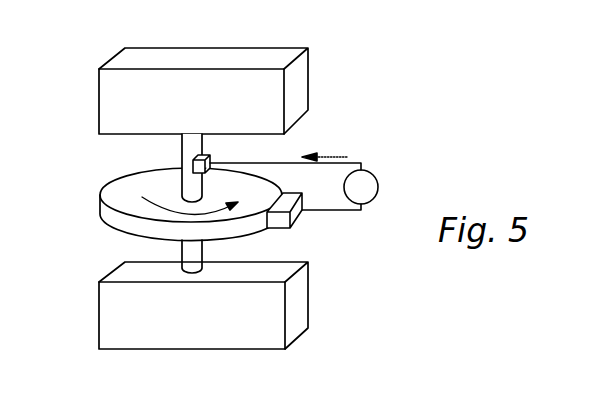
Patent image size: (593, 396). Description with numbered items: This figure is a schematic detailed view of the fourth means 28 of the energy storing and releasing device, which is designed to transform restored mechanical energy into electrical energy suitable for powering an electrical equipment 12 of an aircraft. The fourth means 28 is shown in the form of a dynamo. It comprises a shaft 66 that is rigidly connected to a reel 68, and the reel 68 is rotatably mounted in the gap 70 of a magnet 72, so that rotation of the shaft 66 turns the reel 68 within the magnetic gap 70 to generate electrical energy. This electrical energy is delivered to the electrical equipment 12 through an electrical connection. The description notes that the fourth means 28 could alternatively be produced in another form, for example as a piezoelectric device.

The fourth means 28 is at (328, 48).
The magnet 72 is at (122, 318).
The reel 68 is at (115, 217).
The shaft 66 is at (188, 253).
The gap 70 is at (84, 159).
The electrical equipment 12 is at (285, 190).